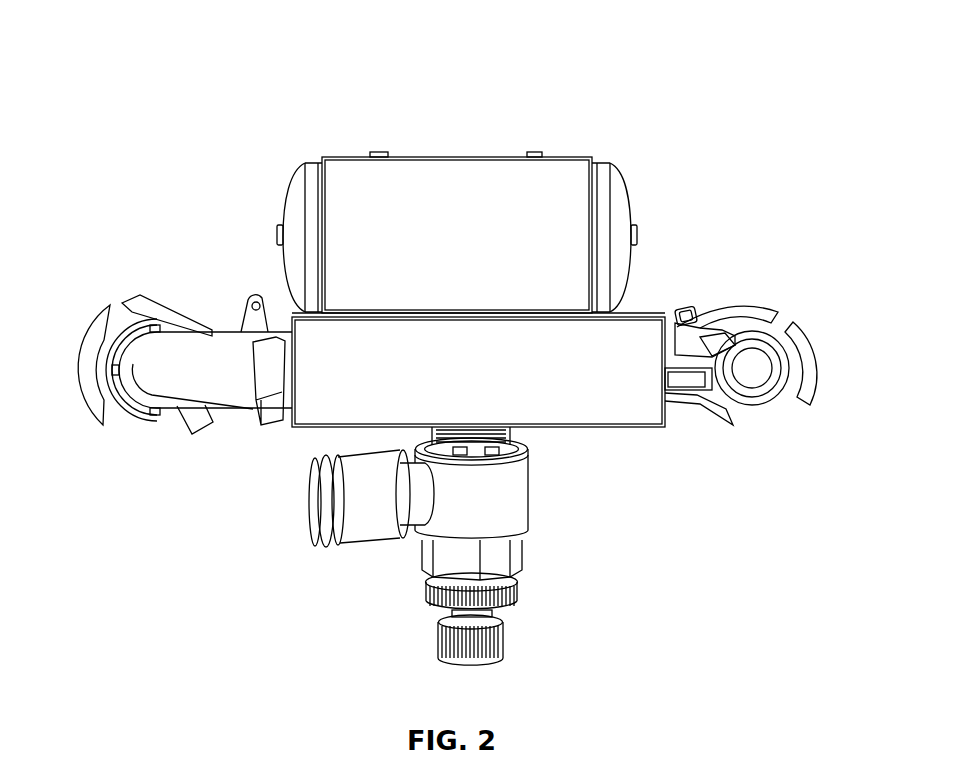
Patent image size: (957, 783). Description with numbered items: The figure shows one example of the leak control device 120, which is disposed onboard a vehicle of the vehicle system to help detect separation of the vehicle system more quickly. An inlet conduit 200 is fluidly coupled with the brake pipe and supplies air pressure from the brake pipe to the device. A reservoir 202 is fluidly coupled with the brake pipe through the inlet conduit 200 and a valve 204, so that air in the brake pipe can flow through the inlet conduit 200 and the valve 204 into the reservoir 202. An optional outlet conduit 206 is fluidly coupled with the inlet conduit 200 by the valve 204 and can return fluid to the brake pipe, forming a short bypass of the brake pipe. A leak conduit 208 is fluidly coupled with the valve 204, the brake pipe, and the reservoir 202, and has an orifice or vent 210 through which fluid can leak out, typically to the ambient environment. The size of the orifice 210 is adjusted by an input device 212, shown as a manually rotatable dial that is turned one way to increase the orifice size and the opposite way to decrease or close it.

The leak control device 120 is at (162, 161).
The inlet conduit 200 is at (752, 372).
The reservoir 202 is at (455, 192).
The valve 204 is at (567, 395).
The outlet conduit 206 is at (162, 357).
The leak conduit 208 is at (507, 510).
The orifice or vent 210 is at (315, 504).
The input device 212 is at (487, 642).